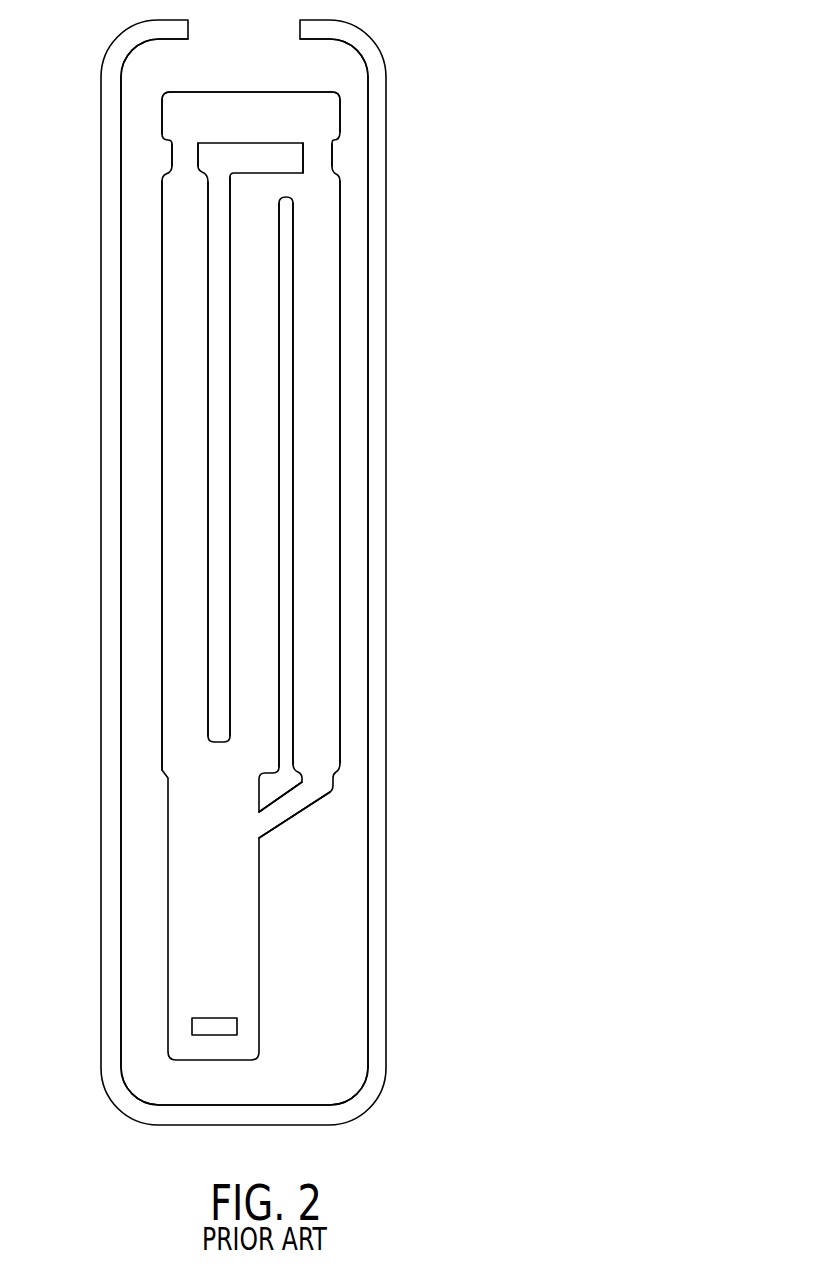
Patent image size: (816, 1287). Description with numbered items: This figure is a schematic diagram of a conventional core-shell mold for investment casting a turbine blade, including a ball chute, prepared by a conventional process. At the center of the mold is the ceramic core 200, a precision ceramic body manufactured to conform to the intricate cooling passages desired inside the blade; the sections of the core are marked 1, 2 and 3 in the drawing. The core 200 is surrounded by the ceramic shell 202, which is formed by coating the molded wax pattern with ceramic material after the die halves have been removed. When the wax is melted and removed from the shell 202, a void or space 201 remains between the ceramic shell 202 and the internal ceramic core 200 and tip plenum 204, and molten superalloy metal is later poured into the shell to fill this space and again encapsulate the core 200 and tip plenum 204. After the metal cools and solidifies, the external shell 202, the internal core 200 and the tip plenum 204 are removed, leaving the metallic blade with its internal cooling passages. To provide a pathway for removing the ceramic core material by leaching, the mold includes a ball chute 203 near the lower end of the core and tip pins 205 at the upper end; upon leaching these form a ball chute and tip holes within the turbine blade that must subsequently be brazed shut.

The ceramic core 200 is at (340, 672).
The void or space 201 is at (352, 447).
The ceramic shell 202 is at (388, 543).
The ball chute 203 is at (312, 795).
The tip plenum 204 is at (320, 124).
The tip pins 205 is at (330, 160).
The first electrode section 1 is at (185, 475).
The second electrode section 2 is at (254, 472).
The third electrode section 3 is at (316, 472).